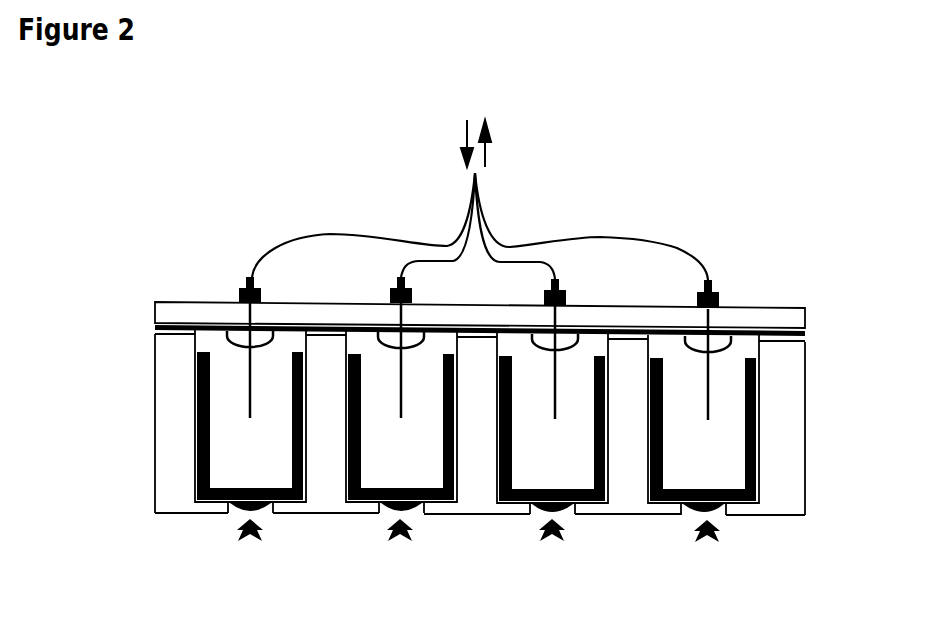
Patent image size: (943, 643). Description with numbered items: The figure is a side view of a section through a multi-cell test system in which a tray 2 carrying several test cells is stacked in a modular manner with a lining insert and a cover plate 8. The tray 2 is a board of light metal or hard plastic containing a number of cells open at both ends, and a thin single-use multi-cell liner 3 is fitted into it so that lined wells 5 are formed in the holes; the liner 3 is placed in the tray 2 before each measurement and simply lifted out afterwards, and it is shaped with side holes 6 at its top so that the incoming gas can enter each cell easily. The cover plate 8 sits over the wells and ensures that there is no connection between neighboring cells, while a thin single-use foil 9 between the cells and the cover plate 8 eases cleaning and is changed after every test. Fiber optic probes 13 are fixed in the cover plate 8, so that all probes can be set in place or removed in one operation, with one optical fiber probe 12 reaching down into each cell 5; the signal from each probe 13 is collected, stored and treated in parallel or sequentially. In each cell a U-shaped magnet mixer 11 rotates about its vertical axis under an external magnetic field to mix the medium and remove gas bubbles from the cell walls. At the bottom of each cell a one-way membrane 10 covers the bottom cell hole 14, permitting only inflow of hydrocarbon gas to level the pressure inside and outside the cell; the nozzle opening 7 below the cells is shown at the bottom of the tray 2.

The tray 2 is at (168, 482).
The multi-cell liner 3 is at (207, 343).
The lined well 5 is at (742, 356).
The side hole 6 is at (563, 340).
The inlet nozzle 7 is at (393, 503).
The cover plate 8 is at (192, 313).
The single use foil 9 is at (155, 326).
The one-way membrane 10 is at (718, 515).
The U-shaped magnet mixer 11 is at (763, 385).
The optical fiber probe 12 is at (713, 345).
The fiber optic probes 13 is at (530, 263).
The bottom cell hole 14 is at (683, 513).